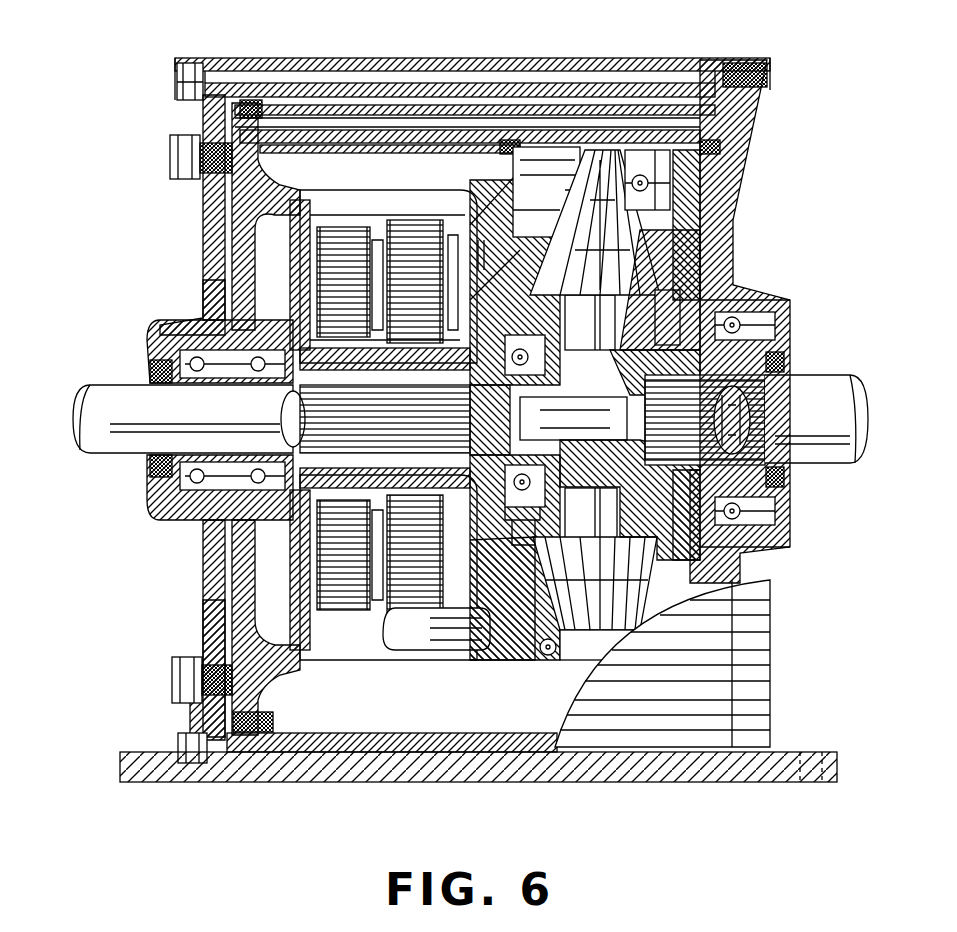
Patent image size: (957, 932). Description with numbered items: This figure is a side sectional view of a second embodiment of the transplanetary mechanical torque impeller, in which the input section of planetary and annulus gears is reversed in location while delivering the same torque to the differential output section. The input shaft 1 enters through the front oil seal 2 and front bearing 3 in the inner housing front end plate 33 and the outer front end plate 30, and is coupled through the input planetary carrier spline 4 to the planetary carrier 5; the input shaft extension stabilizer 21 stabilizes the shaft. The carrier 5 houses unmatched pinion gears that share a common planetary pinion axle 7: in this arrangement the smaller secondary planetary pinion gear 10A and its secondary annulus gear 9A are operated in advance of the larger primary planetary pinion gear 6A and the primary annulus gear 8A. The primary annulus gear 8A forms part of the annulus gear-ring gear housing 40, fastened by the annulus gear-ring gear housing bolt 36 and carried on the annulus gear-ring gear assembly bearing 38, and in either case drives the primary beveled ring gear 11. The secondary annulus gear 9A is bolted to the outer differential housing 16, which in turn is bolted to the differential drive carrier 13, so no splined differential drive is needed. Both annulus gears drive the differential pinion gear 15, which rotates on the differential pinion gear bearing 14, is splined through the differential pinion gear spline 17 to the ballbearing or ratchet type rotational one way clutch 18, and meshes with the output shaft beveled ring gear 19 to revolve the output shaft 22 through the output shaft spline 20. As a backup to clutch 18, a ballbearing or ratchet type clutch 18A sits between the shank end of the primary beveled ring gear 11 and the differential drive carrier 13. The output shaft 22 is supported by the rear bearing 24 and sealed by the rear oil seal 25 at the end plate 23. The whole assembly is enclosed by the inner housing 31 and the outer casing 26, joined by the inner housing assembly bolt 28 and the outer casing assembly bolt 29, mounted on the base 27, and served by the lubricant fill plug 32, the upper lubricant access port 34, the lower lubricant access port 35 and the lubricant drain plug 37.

The input shaft 1 is at (108, 412).
The front oil seal 2 is at (150, 462).
The front bearing 3 is at (185, 485).
The input planetary carrier spline 4 is at (302, 398).
The planetary carrier 5 is at (468, 372).
The primary planetary pinion gear 6A is at (462, 590).
The planetary pinion axle 7 is at (302, 247).
The primary annulus gear 8A is at (430, 210).
The secondary annulus gear 9A is at (312, 205).
The secondary planetary pinion gear 10A is at (298, 228).
The primary beveled ring gear 11 is at (497, 232).
The differential drive carrier 13 is at (612, 390).
The differential pinion gear bearing 14 is at (520, 338).
The differential pinion gear 15 is at (712, 222).
The outer differential housing 16 is at (560, 216).
The differential pinion gear spline 17 is at (672, 162).
The ballbearing or ratchet type rotational one way clutch 18 is at (728, 172).
The ballbearing or ratchet type clutch 18A is at (545, 470).
The output shaft beveled ring gear 19 is at (640, 232).
The output shaft spline 20 is at (752, 395).
The input shaft extension stabilizer 21 is at (835, 420).
The output shaft 22 is at (858, 440).
The end plate 23 is at (775, 665).
The rear bearing 24 is at (745, 310).
The rear oil seal 25 is at (788, 478).
The outer casing 26 is at (512, 66).
The base 27 is at (660, 778).
The inner housing assembly bolt 28 is at (430, 120).
The outer casing assembly bolt 29 is at (312, 75).
The outer front end plate 30 is at (192, 119).
The inner housing 31 is at (290, 100).
The lubricant fill plug 32 is at (172, 160).
The inner housing front end plate 33 is at (243, 200).
The upper lubricant access port 34 is at (232, 289).
The lower lubricant access port 35 is at (278, 570).
The annulus gear-ring gear housing bolt 36 is at (212, 640).
The lubricant drain plug 37 is at (180, 680).
The annulus gear-ring gear assembly bearing 38 is at (198, 520).
The annulus gear-ring gear housing 40 is at (400, 655).